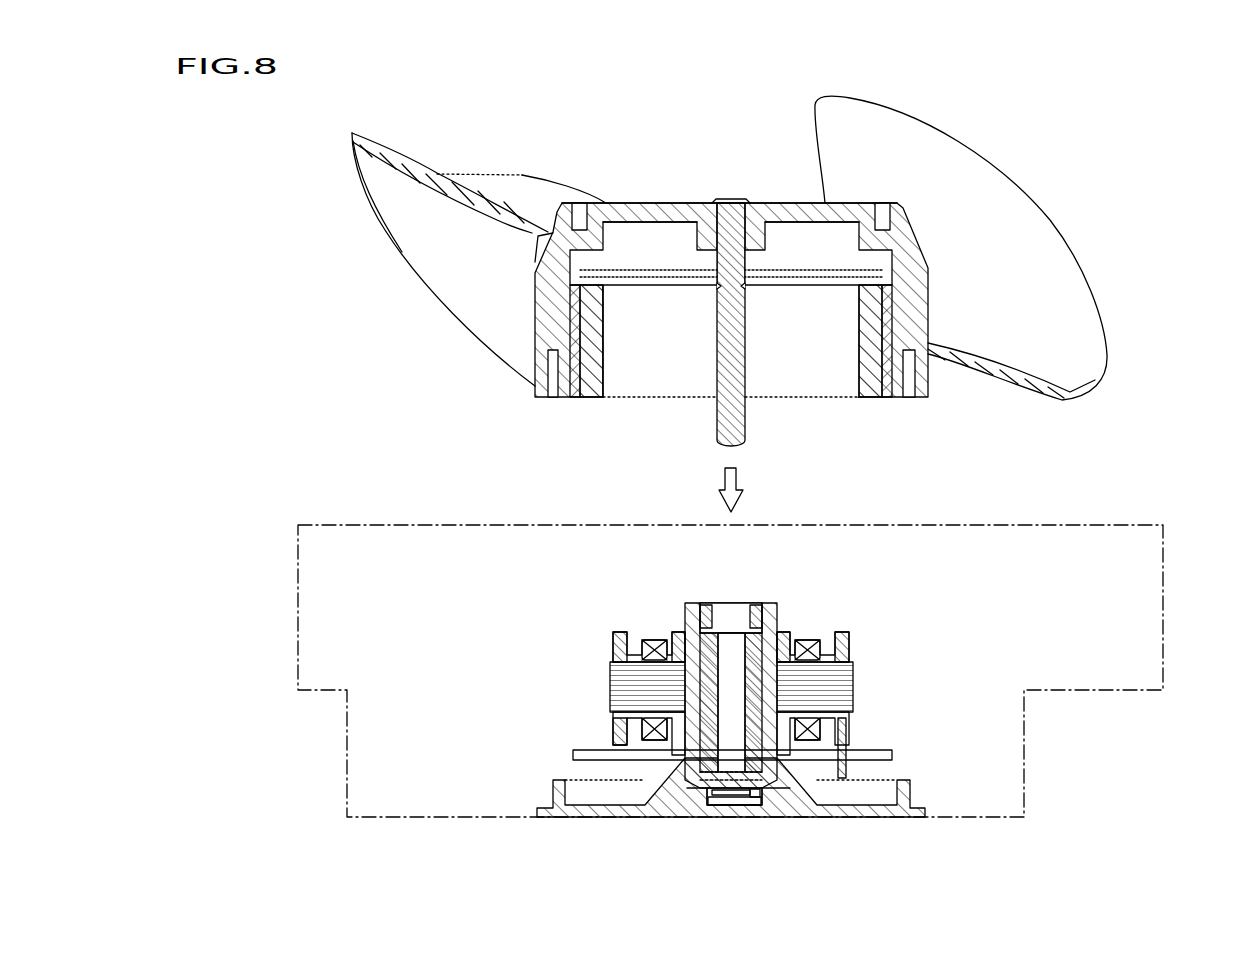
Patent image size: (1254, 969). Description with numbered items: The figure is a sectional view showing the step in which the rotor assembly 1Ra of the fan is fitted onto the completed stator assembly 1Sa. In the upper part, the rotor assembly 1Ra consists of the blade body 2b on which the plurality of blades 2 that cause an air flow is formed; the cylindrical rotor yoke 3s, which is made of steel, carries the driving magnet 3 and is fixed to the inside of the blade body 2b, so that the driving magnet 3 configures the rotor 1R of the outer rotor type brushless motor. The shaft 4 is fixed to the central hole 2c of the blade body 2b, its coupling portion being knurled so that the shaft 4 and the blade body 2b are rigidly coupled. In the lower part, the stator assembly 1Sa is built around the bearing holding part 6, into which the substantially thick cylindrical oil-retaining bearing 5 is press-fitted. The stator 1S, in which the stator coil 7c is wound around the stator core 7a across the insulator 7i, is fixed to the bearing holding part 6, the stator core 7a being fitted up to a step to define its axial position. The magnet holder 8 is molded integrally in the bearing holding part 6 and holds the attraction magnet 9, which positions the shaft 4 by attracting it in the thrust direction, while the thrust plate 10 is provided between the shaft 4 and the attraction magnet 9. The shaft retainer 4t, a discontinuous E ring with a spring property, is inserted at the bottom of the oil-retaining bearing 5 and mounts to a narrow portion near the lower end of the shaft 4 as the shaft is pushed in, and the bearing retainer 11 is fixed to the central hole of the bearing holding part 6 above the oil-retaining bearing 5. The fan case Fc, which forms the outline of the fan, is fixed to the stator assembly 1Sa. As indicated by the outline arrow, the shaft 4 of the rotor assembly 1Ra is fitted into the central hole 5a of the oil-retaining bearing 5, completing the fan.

The rotor assembly 1Ra is at (1004, 172).
The blade 2 is at (407, 238).
The blade body 2b is at (655, 201).
The central hole 2c is at (720, 203).
The shaft 4 is at (739, 203).
The rotor 1R is at (854, 376).
The driving magnet 3 is at (870, 397).
The cylindrical rotor yoke 3s is at (888, 397).
The fan case Fc is at (1165, 566).
The shaft retainer 4t is at (778, 782).
The bearing holding part 6 is at (770, 786).
The magnet holder 8 is at (712, 800).
The attraction magnet 9 is at (727, 795).
The thrust plate 10 is at (754, 796).
The oil-retaining bearing 5 is at (697, 784).
The central hole 5a is at (740, 660).
The bearing retainer 11 is at (707, 606).
The stator core 7a is at (614, 685).
The stator 1S is at (857, 690).
The insulator 7i is at (614, 724).
The stator assembly 1Sa is at (877, 640).
The stator coil 7c is at (808, 640).